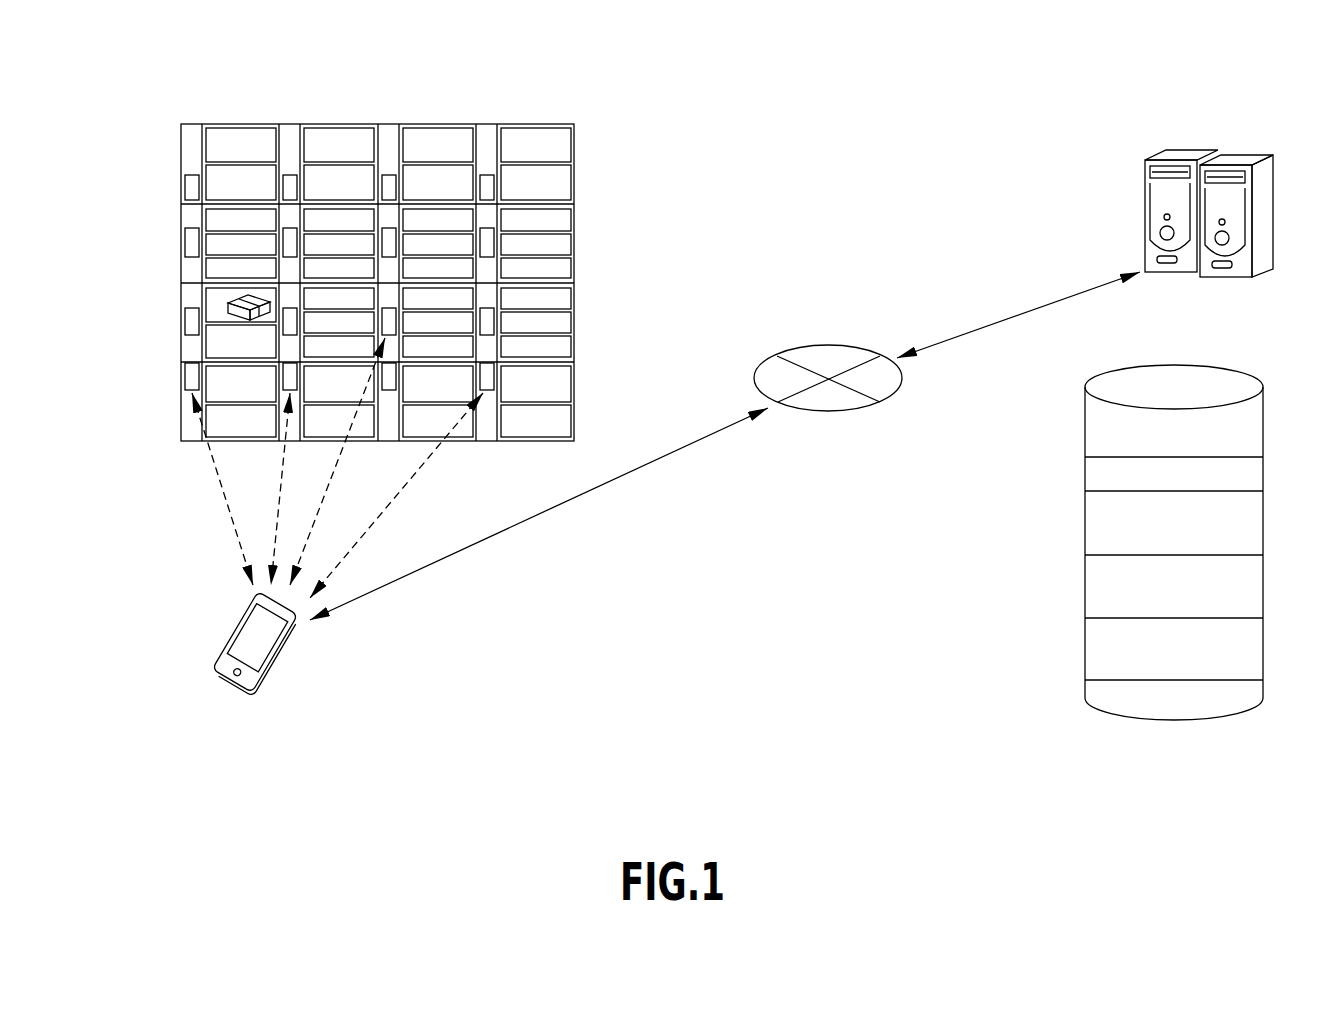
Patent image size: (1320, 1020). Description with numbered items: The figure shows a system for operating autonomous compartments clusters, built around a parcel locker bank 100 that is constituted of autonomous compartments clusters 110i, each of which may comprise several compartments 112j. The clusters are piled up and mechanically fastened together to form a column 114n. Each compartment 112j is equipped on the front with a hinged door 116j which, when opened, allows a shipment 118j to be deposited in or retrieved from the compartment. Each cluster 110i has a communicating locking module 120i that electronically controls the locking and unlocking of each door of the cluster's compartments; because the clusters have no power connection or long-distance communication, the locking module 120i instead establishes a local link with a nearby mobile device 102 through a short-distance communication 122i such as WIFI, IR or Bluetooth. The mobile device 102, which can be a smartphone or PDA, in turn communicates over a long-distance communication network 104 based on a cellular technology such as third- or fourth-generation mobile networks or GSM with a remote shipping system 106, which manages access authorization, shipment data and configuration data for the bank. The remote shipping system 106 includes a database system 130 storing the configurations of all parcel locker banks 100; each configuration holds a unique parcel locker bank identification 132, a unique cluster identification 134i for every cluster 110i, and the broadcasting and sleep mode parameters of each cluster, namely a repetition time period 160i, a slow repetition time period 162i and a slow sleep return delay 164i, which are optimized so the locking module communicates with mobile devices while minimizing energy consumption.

The parcel locker bank 100 is at (148, 118).
The mobile device 102 is at (230, 688).
The long-distance communication network 104 is at (826, 346).
The remote shipping system 106 is at (1195, 150).
The autonomous compartments cluster 110i is at (575, 140).
The compartment 112j is at (558, 184).
The column 114n is at (340, 108).
The hinged door 116j is at (208, 303).
The shipment 118j is at (250, 291).
The communicating locking module 120i is at (185, 380).
The short-distance communication 122i is at (217, 542).
The database system 130 is at (1190, 385).
The parcel locker bank identification 132 is at (1085, 445).
The cluster identification 134i is at (1085, 478).
The repetition time period 160i is at (1085, 525).
The slow repetition time period 162i is at (1085, 588).
The slow sleep return delay 164i is at (1085, 650).